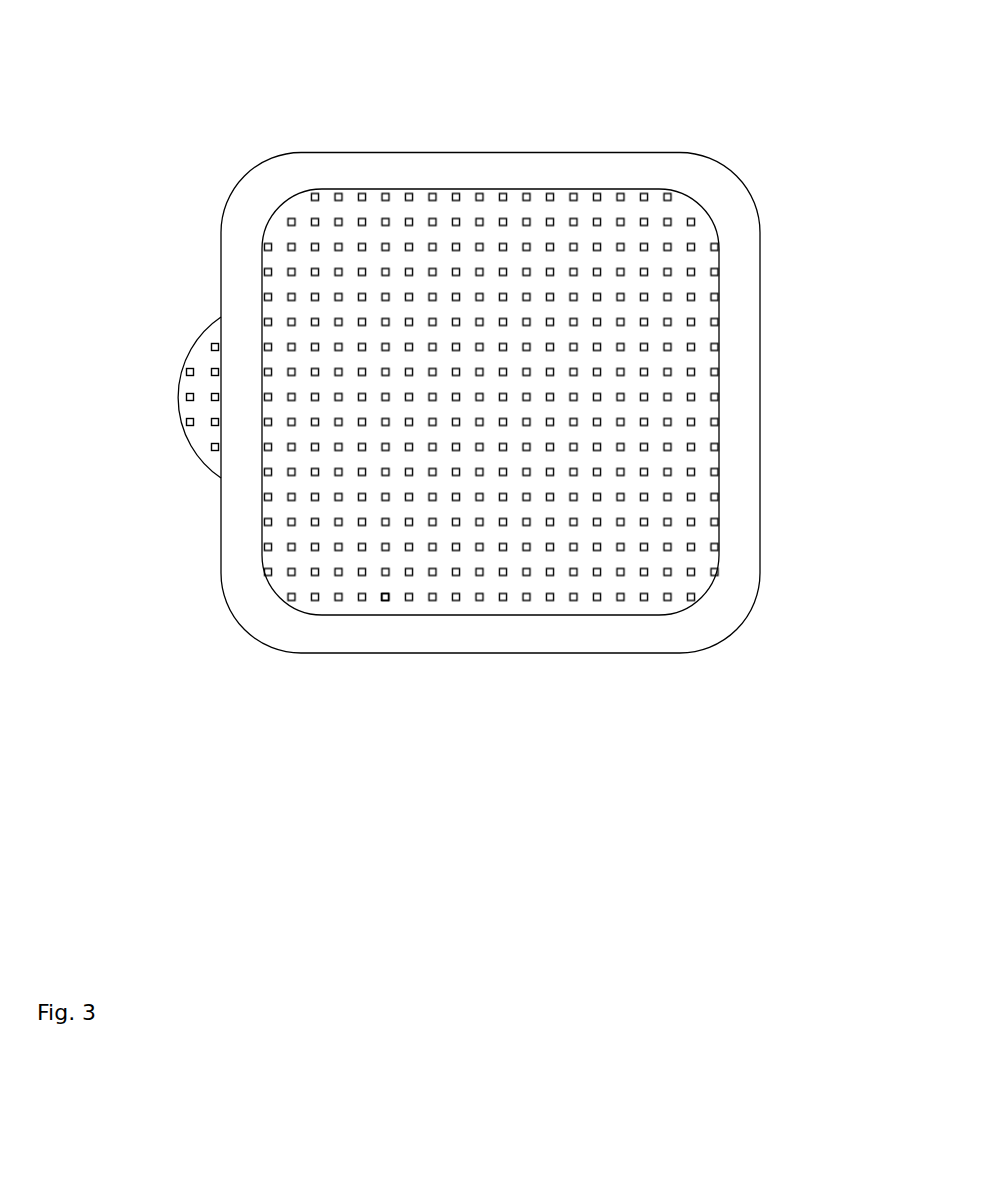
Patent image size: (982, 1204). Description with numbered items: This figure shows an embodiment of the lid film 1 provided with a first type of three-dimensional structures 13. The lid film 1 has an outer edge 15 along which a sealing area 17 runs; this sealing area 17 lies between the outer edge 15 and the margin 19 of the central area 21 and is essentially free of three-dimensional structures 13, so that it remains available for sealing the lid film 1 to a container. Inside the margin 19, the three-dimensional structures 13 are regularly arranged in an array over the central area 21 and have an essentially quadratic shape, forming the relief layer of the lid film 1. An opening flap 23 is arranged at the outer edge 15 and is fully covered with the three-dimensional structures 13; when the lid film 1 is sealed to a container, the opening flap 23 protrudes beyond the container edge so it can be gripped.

The lid film 1 is at (574, 72).
The three-dimensional structures 13 is at (213, 425).
The outer edge 15 is at (760, 263).
The sealing area 17 is at (549, 475).
The margin 19 is at (610, 615).
The central area 21 is at (445, 607).
The opening flap 23 is at (182, 351).